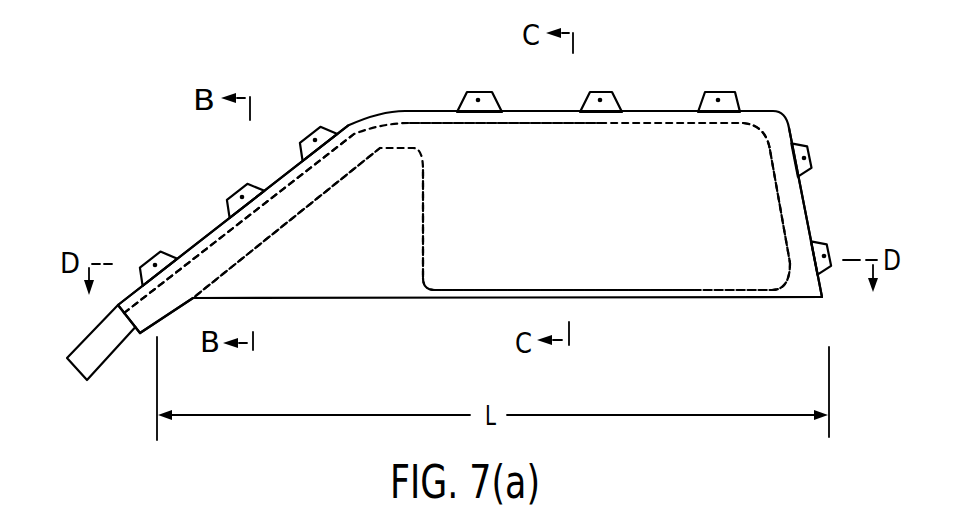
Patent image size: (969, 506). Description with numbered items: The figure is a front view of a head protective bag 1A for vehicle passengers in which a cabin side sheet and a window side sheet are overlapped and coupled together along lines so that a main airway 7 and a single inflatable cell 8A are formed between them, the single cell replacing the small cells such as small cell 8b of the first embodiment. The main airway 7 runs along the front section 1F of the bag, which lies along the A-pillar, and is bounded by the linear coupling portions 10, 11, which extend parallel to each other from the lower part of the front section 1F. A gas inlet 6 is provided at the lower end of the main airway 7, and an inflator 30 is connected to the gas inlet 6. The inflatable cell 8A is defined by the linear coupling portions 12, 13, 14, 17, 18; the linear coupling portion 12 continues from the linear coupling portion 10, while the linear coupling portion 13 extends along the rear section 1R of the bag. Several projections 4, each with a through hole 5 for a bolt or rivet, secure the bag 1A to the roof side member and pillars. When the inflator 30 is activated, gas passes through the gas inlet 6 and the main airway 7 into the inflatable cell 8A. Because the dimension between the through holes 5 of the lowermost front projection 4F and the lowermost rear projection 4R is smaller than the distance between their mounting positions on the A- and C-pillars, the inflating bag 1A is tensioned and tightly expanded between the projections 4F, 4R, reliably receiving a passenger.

The protective bag 1A is at (663, 74).
The front section 1F is at (222, 222).
The rear section 1R is at (807, 212).
The projection 4 is at (336, 125).
The lowermost projection of the front section 4F is at (168, 253).
The lowermost projection of the rear section 4R is at (825, 278).
The through hole 5 is at (151, 262).
The gas inlet 6 is at (138, 334).
The main airway 7 is at (200, 236).
The inflatable cell 8A is at (440, 214).
The small cell 8b is at (780, 203).
The linear coupling portion 10 is at (295, 170).
The linear coupling portion 11 is at (277, 228).
The linear coupling portion 12 is at (507, 124).
The linear coupling portion 13 is at (769, 183).
The linear coupling portion 14 is at (727, 288).
The linear coupling portion 17 is at (500, 288).
The linear coupling portion 18 is at (420, 253).
The inflator 30 is at (90, 366).